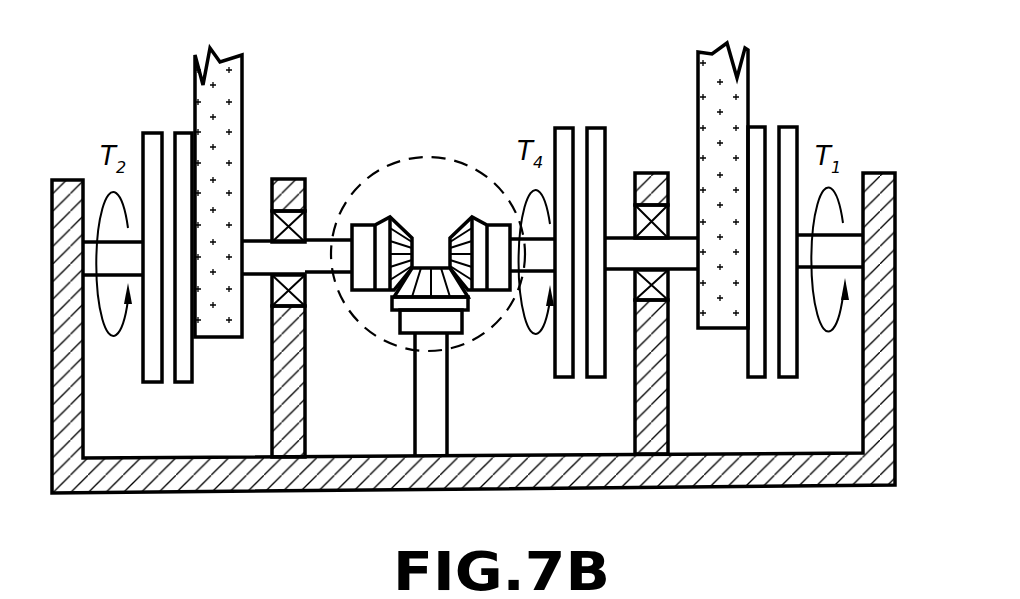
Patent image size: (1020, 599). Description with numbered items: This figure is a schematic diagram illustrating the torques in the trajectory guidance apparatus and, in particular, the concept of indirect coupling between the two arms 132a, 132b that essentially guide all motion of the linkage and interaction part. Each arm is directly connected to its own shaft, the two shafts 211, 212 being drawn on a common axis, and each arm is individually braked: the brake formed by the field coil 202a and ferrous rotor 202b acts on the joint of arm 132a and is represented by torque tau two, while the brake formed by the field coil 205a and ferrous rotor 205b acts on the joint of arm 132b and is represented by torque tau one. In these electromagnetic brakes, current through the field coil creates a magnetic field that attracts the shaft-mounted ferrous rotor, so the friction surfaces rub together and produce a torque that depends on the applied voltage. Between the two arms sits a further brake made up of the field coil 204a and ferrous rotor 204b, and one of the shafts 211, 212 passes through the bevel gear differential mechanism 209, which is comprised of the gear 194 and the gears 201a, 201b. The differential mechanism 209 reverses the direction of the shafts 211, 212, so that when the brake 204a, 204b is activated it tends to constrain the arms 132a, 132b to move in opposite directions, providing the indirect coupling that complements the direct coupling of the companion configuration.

The arm 132a is at (732, 115).
The arm 132b is at (203, 112).
The gear 194 is at (429, 236).
The gear 201a is at (446, 235).
The gear 201b is at (412, 235).
The field coil 202a is at (186, 383).
The ferrous rotor 202b is at (143, 133).
The field coil 204a is at (565, 380).
The ferrous rotor 204b is at (596, 128).
The field coil 205a is at (756, 378).
The ferrous rotor 205b is at (797, 127).
The bevel gear differential mechanism 209 is at (418, 155).
The shaft 211 is at (317, 260).
The shaft 212 is at (517, 287).